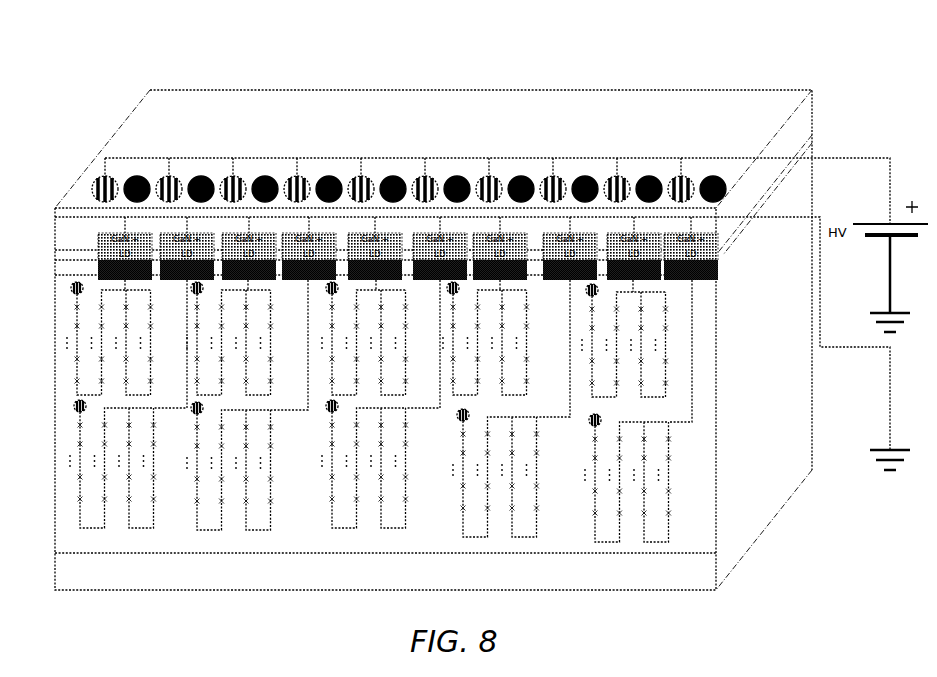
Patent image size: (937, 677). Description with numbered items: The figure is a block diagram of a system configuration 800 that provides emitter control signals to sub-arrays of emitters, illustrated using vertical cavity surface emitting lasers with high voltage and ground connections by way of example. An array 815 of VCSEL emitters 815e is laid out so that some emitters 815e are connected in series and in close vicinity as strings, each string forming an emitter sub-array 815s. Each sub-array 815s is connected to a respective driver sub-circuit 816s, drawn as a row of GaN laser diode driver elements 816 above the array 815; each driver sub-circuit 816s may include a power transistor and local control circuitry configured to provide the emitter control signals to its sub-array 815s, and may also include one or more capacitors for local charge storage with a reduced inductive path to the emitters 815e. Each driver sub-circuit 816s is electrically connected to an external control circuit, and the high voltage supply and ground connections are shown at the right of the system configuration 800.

The system configuration 800 is at (782, 50).
The array 815 is at (162, 535).
The emitter sub-array 815s is at (69, 290).
The emitter 815e is at (672, 510).
The driver sub-circuit 816 is at (728, 230).
The driver sub-circuit 816s is at (110, 243).